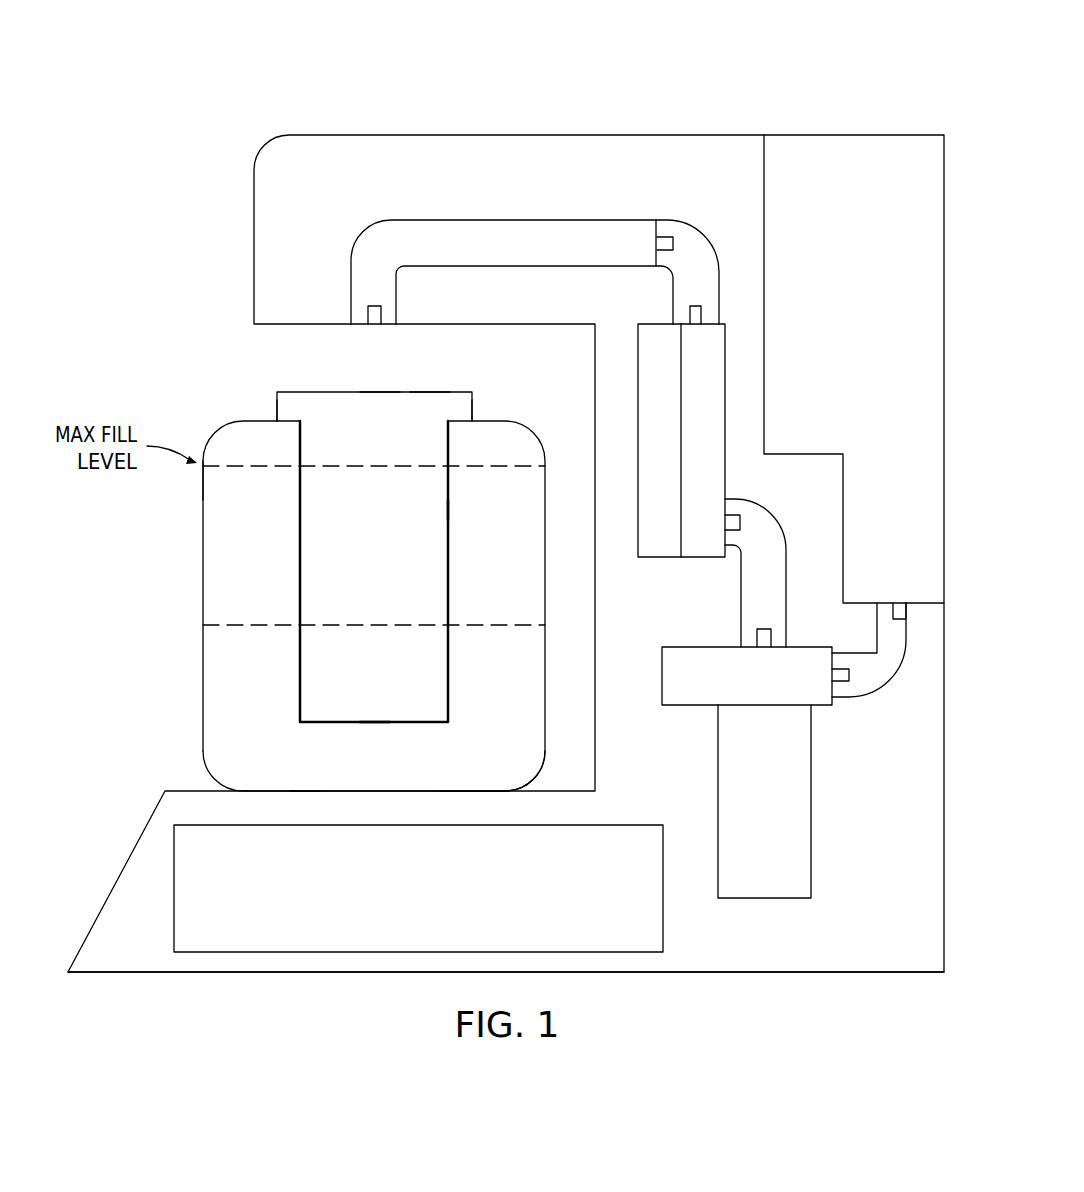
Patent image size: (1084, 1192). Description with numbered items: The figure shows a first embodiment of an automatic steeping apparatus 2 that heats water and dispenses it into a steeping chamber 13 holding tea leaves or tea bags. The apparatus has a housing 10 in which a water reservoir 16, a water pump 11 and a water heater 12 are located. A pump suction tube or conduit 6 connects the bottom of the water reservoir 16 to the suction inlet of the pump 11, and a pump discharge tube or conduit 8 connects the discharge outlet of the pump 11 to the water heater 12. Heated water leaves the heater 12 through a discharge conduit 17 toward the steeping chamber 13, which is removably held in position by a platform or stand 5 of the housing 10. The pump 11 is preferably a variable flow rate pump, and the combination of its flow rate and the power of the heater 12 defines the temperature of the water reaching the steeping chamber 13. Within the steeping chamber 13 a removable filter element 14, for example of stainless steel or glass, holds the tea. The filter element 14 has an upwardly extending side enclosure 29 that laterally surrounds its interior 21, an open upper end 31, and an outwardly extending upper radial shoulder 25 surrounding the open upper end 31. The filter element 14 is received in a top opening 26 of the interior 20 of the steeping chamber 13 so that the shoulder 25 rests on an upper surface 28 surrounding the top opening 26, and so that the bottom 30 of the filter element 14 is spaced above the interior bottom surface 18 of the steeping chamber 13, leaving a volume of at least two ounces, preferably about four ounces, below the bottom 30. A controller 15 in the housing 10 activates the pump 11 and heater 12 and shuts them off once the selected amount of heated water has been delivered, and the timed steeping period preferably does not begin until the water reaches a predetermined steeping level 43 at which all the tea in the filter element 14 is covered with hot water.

The automatic steeping apparatus 2 is at (506, 507).
The platform or stand 5 is at (492, 761).
The pump suction tube 6 is at (869, 680).
The pump discharge tube 8 is at (768, 562).
The housing 10 is at (506, 1007).
The water pump 11 is at (767, 763).
The water heater 12 is at (687, 461).
The steeping chamber 13 is at (319, 606).
The filter element 14 is at (374, 379).
The controller 15 is at (418, 888).
The water reservoir 16 is at (854, 377).
The discharge conduit 17 is at (535, 244).
The interior bottom surface 18 is at (296, 763).
The interior of the steeping chamber 20 is at (175, 485).
The interior of the filter element 21 is at (374, 571).
The upper radial shoulder 25 is at (489, 393).
The top opening 26 is at (381, 367).
The upper surface 28 is at (257, 394).
The side enclosure 29 is at (419, 503).
The bottom of the filter element 30 is at (367, 752).
The open upper end 31 is at (430, 367).
The steeping level 43 is at (316, 586).